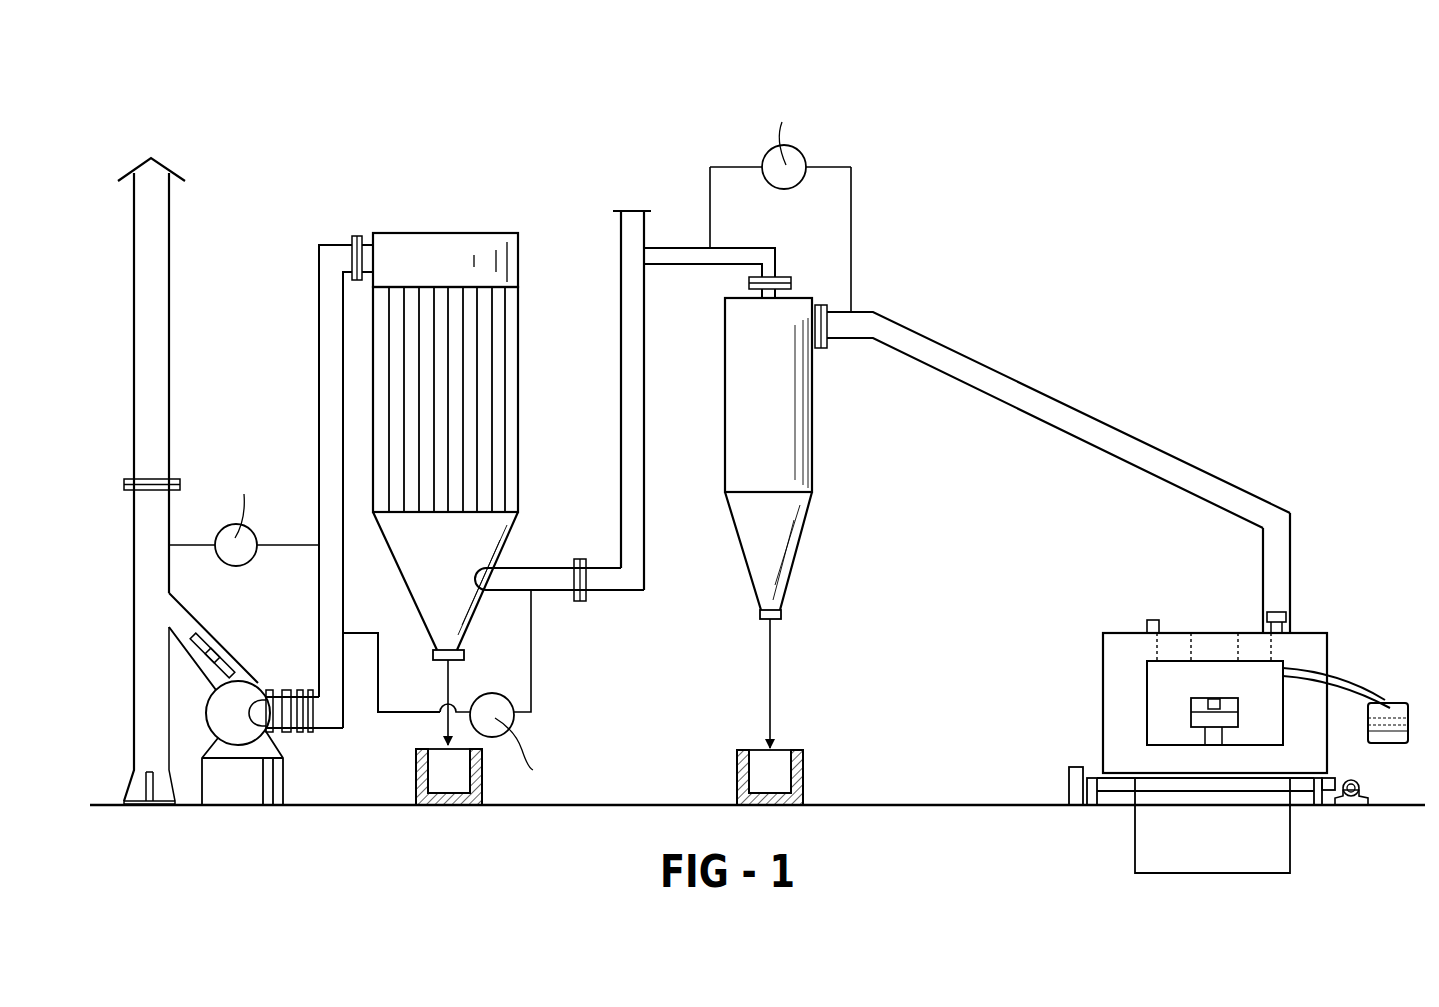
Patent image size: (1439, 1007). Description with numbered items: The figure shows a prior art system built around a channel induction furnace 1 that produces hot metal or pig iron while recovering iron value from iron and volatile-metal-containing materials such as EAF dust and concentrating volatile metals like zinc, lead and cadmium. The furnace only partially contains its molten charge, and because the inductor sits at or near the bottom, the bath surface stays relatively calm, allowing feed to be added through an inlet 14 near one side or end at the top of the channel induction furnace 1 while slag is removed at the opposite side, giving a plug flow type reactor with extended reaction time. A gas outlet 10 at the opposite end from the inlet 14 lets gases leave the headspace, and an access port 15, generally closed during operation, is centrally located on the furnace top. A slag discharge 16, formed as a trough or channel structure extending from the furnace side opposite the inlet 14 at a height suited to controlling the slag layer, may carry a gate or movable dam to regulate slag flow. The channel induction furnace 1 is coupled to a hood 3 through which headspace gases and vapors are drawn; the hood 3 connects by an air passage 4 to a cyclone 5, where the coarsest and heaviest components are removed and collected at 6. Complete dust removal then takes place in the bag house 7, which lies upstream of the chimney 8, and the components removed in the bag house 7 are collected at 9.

The channel induction furnace 1 is at (1070, 725).
The hood 3 is at (1293, 510).
The air passage 4 is at (1005, 370).
The cyclone 5 is at (787, 437).
The collection point for cyclone components 6 is at (773, 773).
The bag house 7 is at (496, 393).
The chimney 8 is at (170, 403).
The collection point for bag house components 9 is at (445, 777).
The gas outlet 10 is at (1276, 610).
The inlet 14 is at (1146, 628).
The access port 15 is at (1215, 633).
The slag discharge 16 is at (1372, 672).